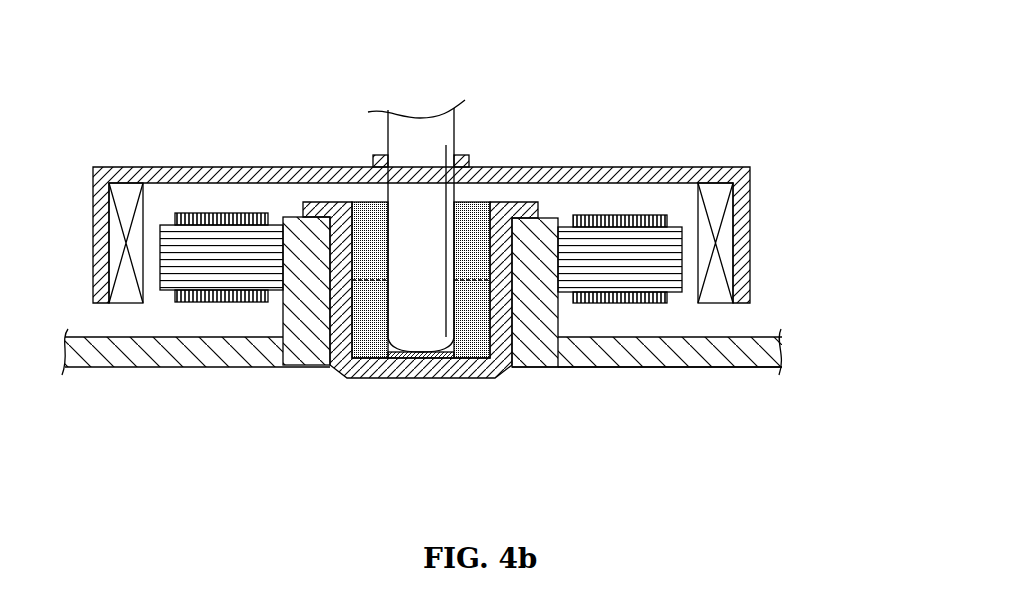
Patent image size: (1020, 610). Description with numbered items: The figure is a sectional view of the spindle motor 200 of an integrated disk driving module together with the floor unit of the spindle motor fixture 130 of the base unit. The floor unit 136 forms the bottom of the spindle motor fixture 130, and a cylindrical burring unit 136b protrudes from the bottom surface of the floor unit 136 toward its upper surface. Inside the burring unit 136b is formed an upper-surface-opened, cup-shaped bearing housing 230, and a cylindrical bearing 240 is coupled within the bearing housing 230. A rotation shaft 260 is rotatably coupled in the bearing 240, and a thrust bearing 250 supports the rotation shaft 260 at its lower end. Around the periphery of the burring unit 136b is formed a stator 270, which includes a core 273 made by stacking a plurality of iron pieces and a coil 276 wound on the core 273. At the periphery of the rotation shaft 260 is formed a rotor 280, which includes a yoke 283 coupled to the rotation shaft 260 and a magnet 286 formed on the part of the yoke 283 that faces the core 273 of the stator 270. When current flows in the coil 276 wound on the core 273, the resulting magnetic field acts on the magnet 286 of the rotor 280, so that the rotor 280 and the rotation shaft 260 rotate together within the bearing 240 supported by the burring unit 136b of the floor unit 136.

The spindle motor fixture 130 is at (672, 378).
The floor unit 136 is at (580, 357).
The burring unit 136b is at (312, 302).
The spindle motor 200 is at (550, 155).
The bearing housing 230 is at (442, 372).
The bearing 240 is at (477, 345).
The thrust bearing 250 is at (402, 360).
The rotation shaft 260 is at (398, 138).
The stator 270 is at (451, 186).
The core 273 is at (652, 250).
The coil 276 is at (429, 203).
The rotor 280 is at (842, 133).
The yoke 283 is at (735, 168).
The magnet 286 is at (717, 237).